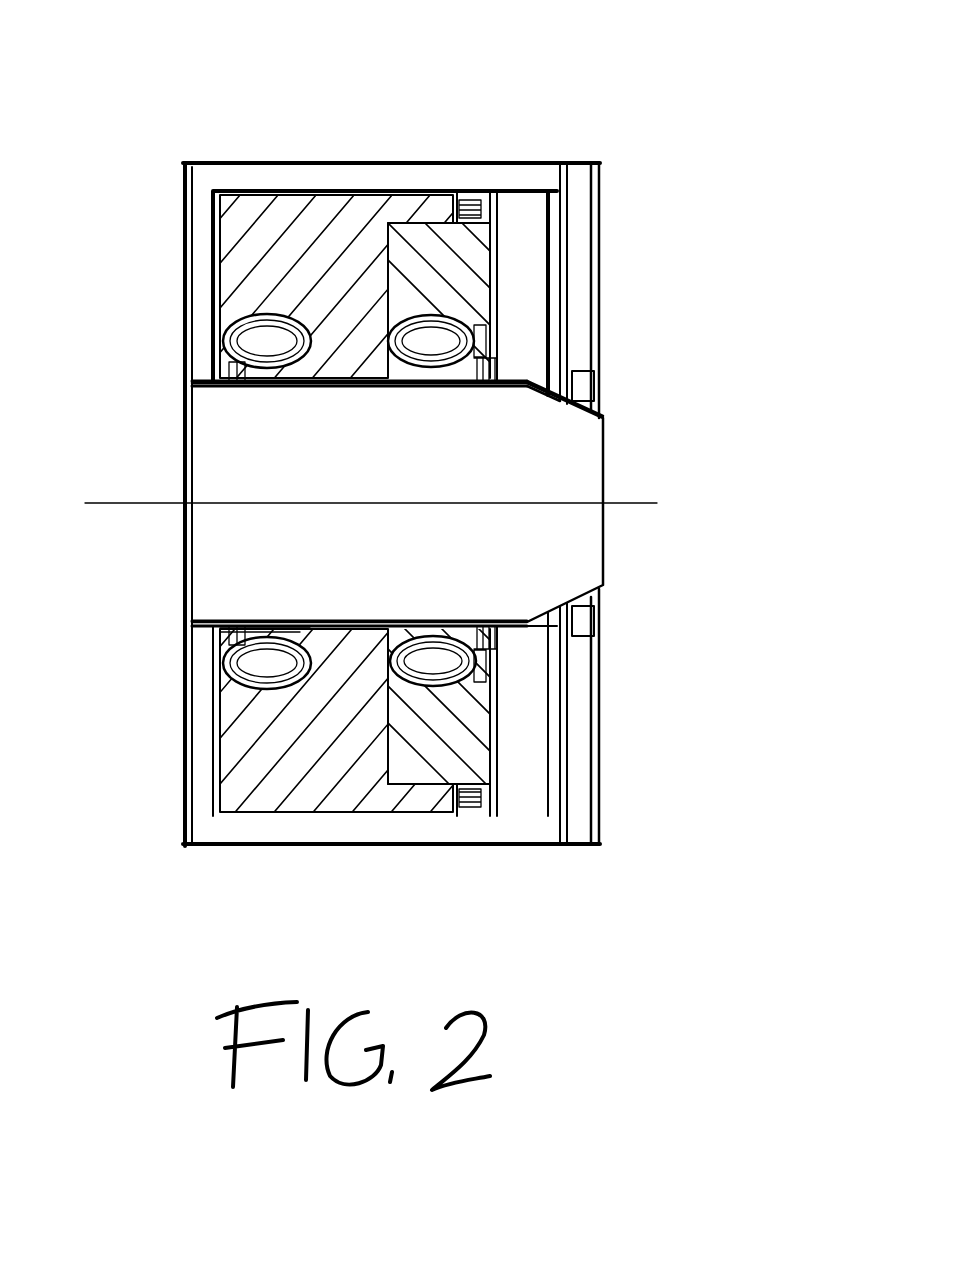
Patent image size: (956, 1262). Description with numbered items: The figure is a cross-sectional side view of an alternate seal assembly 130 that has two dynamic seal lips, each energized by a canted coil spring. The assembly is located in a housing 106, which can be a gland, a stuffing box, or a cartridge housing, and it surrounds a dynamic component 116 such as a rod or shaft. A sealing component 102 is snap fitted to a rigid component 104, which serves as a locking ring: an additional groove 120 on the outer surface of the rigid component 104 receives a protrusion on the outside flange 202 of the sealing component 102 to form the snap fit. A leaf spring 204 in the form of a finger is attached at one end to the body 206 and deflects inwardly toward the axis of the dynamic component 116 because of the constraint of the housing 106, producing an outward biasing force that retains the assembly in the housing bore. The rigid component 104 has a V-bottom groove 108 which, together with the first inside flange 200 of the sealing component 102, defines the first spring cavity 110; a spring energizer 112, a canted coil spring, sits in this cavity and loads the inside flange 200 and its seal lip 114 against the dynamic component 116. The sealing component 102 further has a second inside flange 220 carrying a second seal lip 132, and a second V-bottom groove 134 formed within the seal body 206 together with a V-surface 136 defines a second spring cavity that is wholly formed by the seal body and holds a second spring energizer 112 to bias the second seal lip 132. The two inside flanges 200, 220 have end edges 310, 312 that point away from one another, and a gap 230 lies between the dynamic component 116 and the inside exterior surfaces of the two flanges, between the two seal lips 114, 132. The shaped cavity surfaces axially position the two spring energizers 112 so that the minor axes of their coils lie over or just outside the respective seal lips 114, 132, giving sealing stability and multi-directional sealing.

The sealing component 102 is at (327, 220).
The rigid component 104 is at (458, 278).
The housing 106 is at (200, 191).
The groove 108 is at (459, 316).
The spring cavity 110 is at (437, 662).
The spring energizer 112 is at (234, 366).
The seal lip 114 is at (455, 621).
The dynamic component 116 is at (548, 560).
The additional groove 120 is at (445, 766).
The seal assembly 130 is at (691, 259).
The second seal lip 132 is at (244, 386).
The second V-bottom groove 134 is at (268, 334).
The second spring cavity 136 is at (246, 345).
The inside flange 200 is at (423, 383).
The outside flange 202 is at (429, 207).
The leaf spring 204 is at (477, 813).
The body 206 is at (250, 765).
The second inside flange 220 is at (270, 622).
The gap 230 is at (302, 622).
The end edge 310 is at (494, 632).
The end edge 312 is at (240, 634).